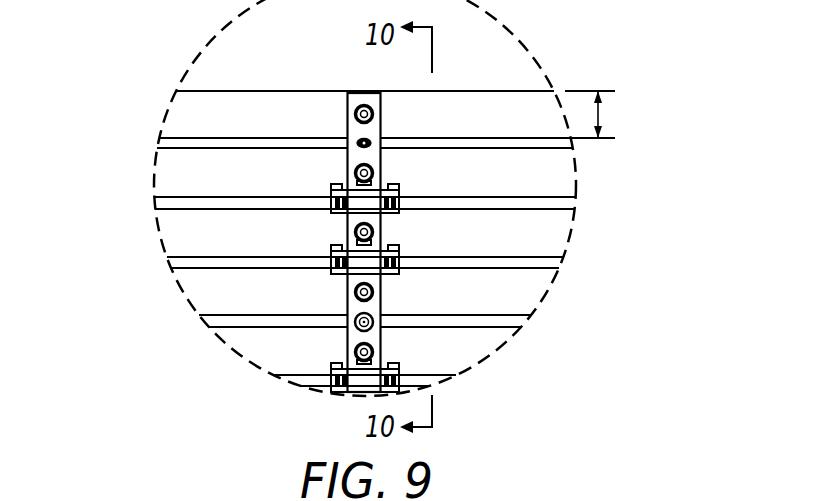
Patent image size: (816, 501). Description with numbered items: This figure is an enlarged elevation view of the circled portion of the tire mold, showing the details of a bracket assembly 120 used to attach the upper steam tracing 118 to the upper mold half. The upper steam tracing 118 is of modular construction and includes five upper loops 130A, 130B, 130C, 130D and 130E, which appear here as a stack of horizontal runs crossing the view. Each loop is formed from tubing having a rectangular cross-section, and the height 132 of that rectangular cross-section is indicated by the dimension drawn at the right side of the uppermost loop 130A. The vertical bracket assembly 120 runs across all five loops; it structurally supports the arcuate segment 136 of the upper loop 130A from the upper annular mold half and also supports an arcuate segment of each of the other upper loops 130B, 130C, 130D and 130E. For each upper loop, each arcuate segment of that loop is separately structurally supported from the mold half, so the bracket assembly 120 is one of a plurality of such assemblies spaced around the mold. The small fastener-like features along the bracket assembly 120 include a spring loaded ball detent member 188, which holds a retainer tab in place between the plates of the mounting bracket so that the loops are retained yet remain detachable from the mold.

The upper steam tracing 118 is at (197, 84).
The arcuate segment 136 is at (492, 100).
The height 132 is at (603, 113).
The upper loop 130A is at (182, 115).
The upper loop 130B is at (180, 168).
The upper loop 130C is at (182, 227).
The upper loop 130D is at (193, 288).
The upper loop 130E is at (257, 350).
The bracket assembly 120 is at (384, 335).
The spring loaded ball detent member 188 is at (364, 187).